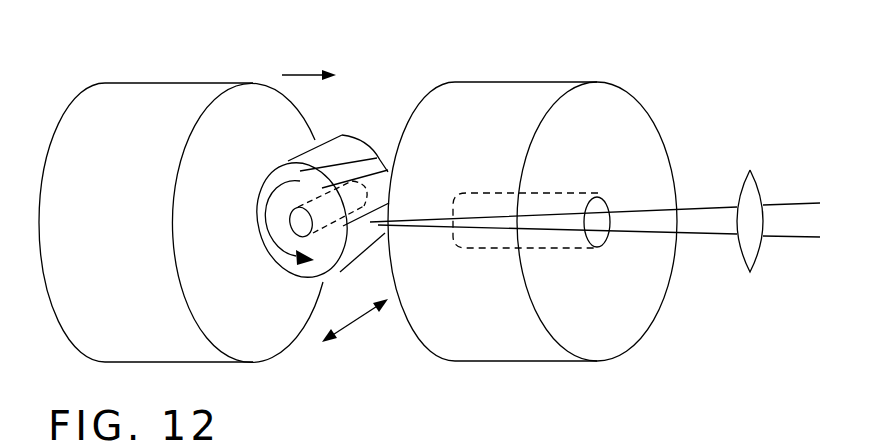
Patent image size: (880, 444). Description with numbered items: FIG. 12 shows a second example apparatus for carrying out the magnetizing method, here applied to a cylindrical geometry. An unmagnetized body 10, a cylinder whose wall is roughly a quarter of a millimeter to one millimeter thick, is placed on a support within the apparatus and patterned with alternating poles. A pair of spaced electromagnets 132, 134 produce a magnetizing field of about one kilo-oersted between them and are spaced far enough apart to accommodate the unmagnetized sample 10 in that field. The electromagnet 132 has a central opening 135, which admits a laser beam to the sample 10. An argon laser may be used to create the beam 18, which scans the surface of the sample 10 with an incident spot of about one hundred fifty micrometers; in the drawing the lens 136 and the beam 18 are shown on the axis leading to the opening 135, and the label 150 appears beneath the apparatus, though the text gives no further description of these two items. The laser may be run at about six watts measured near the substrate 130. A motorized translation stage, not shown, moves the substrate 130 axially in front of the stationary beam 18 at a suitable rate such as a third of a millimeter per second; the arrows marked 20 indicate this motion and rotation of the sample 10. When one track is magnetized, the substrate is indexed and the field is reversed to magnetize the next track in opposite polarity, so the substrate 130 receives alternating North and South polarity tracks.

The unmagnetized body 10 is at (316, 171).
The substrate 130 is at (371, 138).
The electromagnet 132 is at (517, 82).
The electromagnet 134 is at (183, 83).
The central opening 135 is at (606, 200).
The lens 136 is at (757, 190).
The beam 18 is at (720, 237).
The direction of rotation 20 is at (365, 238).
The sensor assembly 150 is at (429, 222).